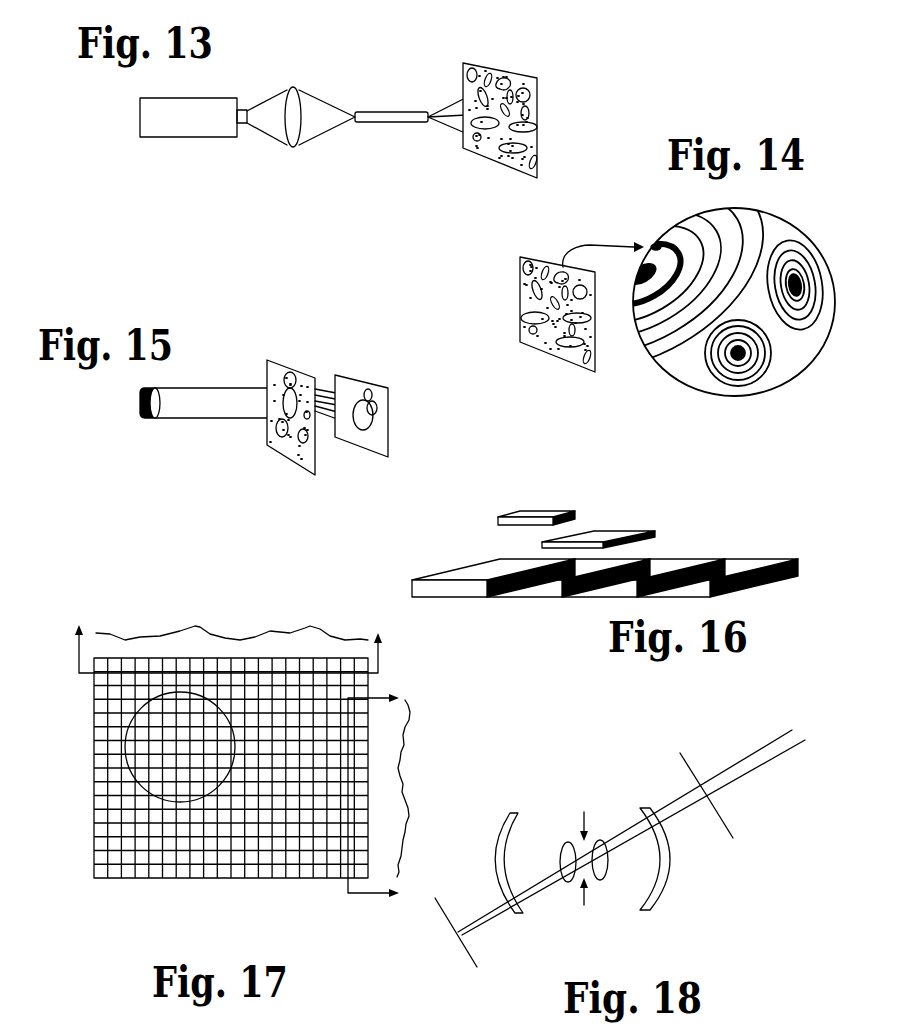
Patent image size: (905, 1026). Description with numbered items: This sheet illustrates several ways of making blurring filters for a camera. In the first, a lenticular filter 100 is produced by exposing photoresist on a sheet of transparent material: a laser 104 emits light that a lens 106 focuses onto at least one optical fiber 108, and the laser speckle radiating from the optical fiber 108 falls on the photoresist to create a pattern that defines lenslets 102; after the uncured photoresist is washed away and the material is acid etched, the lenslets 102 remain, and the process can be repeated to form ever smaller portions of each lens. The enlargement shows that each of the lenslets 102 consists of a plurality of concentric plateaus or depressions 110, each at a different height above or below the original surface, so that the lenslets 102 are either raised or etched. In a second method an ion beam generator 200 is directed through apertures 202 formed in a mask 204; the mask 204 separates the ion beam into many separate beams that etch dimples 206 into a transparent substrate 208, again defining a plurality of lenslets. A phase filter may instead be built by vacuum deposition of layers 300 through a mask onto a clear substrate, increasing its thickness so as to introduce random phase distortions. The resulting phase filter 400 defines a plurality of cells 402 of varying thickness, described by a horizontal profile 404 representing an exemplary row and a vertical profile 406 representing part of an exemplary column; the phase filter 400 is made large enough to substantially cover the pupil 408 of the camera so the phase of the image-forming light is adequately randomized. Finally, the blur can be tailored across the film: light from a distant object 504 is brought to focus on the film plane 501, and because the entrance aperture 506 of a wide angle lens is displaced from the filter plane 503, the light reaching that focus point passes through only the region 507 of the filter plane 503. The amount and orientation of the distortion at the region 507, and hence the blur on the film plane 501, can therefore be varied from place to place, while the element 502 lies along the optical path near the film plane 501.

In FIG. 13, the lenticular filter 100 is at (473, 150).
In FIG. 13, the lenslets 102 is at (533, 103).
In FIG. 14, the lenslets 102 is at (528, 290).
In FIG. 13, the laser 104 is at (170, 137).
In FIG. 13, the lens 106 is at (296, 98).
In FIG. 13, the optical fiber 108 is at (382, 122).
In FIG. 14, the concentric plateaus or depressions 110 is at (657, 246).
In FIG. 15, the ion beam generator 200 is at (140, 400).
In FIG. 15, the apertures 202 is at (270, 373).
In FIG. 15, the mask 204 is at (292, 377).
In FIG. 15, the dimples 206 is at (367, 437).
In FIG. 15, the transparent substrate 208 is at (390, 423).
In FIG. 16, the tiles 300 is at (503, 513).
In FIG. 17, the phase filter 400 is at (72, 846).
In FIG. 17, the cells 402 is at (270, 867).
In FIG. 17, the horizontal profile 404 is at (248, 640).
In FIG. 17, the vertical profile 406 is at (405, 770).
In FIG. 17, the pupil 408 is at (123, 745).
In FIG. 18, the film plane 501 is at (436, 897).
In FIG. 18, the first mirror 502 is at (475, 957).
In FIG. 18, the filter plane 503 is at (722, 818).
In FIG. 18, the light from a distant object 504 is at (763, 765).
In FIG. 18, the entrance aperture 506 is at (584, 907).
In FIG. 18, the region of the filter plane 507 is at (680, 753).